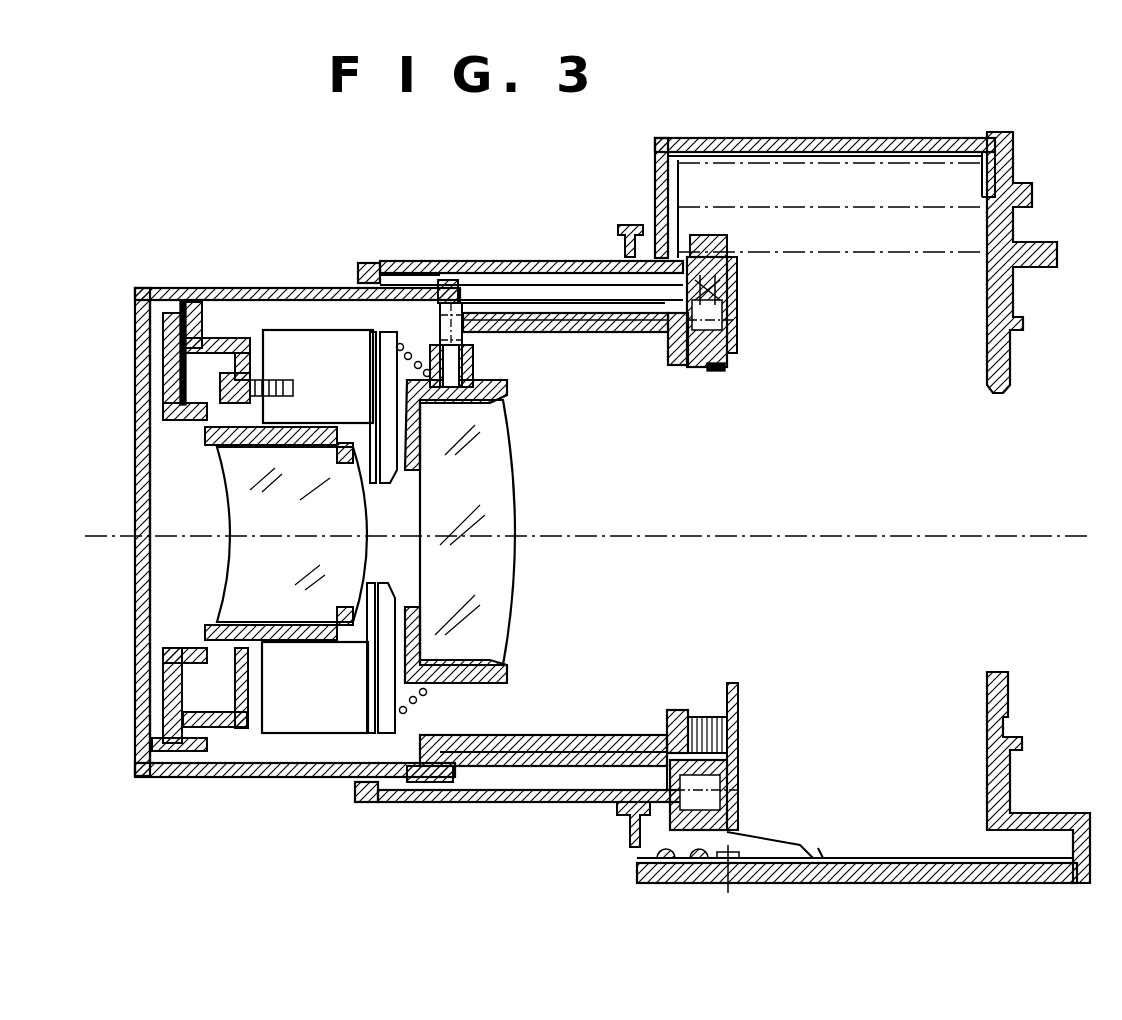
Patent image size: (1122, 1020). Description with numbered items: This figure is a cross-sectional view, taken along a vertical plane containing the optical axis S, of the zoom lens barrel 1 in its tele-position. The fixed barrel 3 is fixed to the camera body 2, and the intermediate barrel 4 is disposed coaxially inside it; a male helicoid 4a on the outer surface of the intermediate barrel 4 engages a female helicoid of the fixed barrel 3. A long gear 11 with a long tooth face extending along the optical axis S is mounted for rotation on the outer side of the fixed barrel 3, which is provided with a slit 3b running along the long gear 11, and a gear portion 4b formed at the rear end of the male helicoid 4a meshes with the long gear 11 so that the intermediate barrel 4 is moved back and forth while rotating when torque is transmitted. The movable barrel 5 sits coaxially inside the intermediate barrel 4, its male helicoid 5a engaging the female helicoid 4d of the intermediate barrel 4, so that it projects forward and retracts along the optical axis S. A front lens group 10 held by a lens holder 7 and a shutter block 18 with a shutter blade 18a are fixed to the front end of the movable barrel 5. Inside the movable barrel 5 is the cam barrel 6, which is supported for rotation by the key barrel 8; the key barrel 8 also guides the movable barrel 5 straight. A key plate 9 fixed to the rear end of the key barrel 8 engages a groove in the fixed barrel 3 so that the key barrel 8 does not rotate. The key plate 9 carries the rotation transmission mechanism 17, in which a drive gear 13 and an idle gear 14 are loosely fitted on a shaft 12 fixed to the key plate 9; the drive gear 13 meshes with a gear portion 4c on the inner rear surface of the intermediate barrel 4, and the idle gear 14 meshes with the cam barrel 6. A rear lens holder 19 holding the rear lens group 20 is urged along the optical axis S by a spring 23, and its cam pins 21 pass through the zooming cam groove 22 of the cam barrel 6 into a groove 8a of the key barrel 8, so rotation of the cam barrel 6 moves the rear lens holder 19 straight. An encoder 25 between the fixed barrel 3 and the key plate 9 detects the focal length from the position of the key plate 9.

The zoom lens barrel 1 is at (477, 235).
The camera body 2 is at (1010, 292).
The fixed barrel 3 is at (718, 138).
The slit 3b is at (898, 260).
The intermediate barrel 4 is at (547, 261).
The male helicoid 4a is at (673, 547).
The gear portion 4b is at (735, 255).
The gear portion 4c is at (700, 272).
The female helicoid 4d is at (515, 272).
The movable barrel 5 is at (213, 290).
The male helicoid 5a is at (420, 263).
The cam barrel 6 is at (612, 332).
The lens holder 7 is at (312, 427).
The key barrel 8 is at (565, 735).
The groove 8a is at (540, 320).
The key plate 9 is at (738, 312).
The front lens group 10 is at (228, 481).
The long gear 11 is at (900, 175).
The shaft 12 is at (737, 343).
The drive gear 13 is at (737, 282).
The idle gear 14 is at (603, 262).
The rotation transmission mechanism 17 is at (737, 371).
The shutter block 18 is at (336, 368).
The shutter blade 18a is at (380, 507).
The rear lens holder 19 is at (462, 680).
The rear lens group 20 is at (515, 450).
The cam pin 21 is at (446, 280).
The zooming cam groove 22 is at (463, 330).
The spring 23 is at (402, 340).
The encoder 25 is at (755, 843).
The optical axis S is at (977, 530).